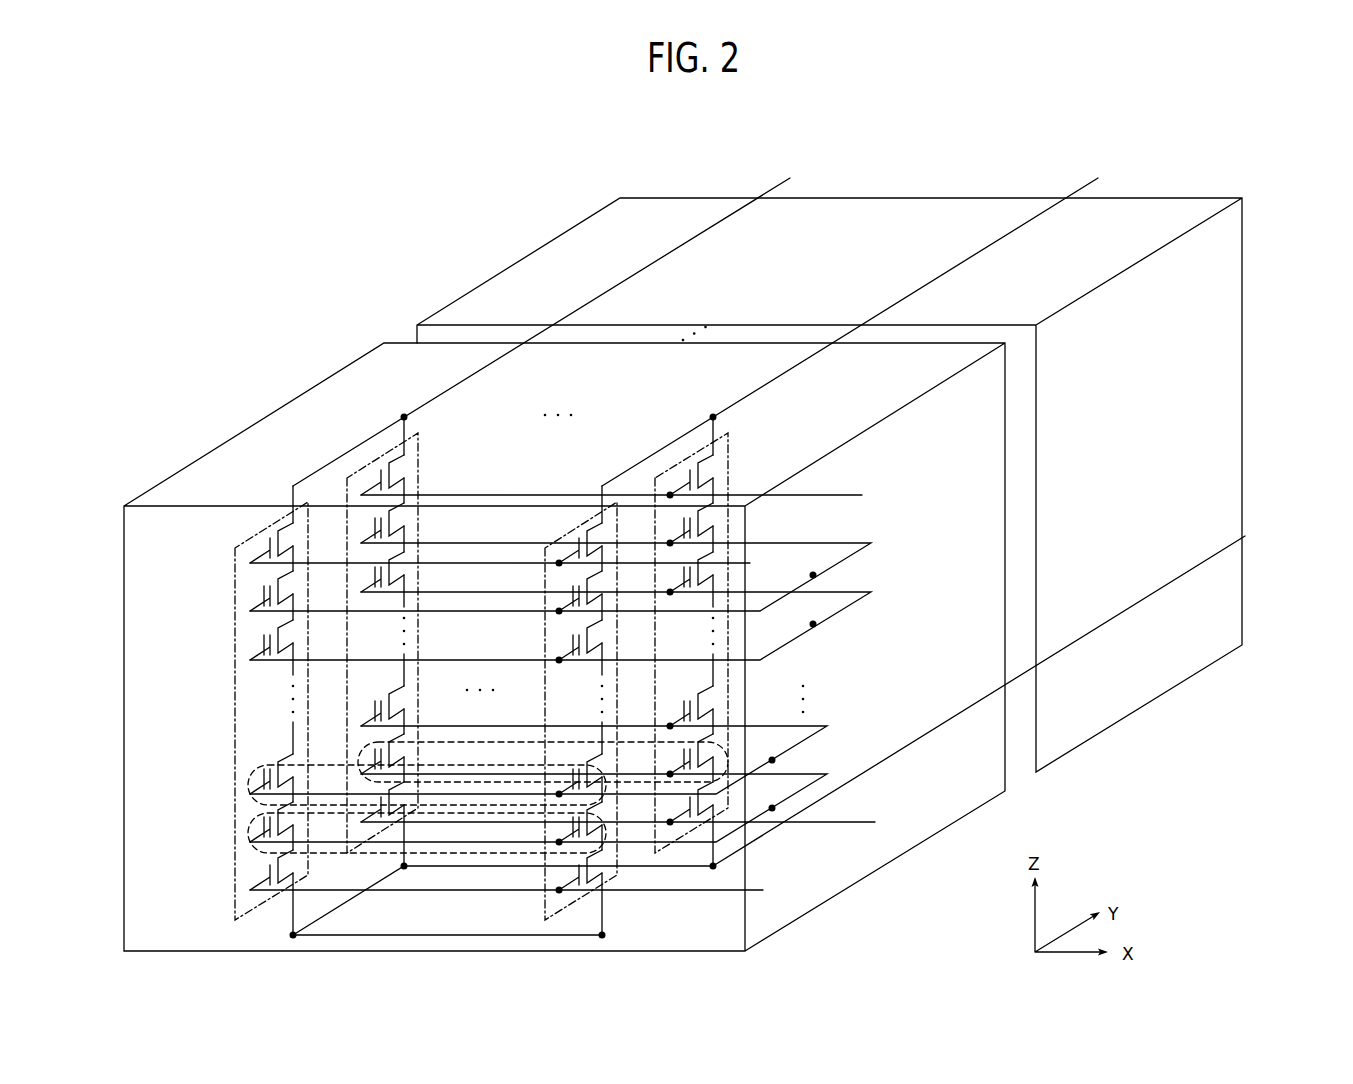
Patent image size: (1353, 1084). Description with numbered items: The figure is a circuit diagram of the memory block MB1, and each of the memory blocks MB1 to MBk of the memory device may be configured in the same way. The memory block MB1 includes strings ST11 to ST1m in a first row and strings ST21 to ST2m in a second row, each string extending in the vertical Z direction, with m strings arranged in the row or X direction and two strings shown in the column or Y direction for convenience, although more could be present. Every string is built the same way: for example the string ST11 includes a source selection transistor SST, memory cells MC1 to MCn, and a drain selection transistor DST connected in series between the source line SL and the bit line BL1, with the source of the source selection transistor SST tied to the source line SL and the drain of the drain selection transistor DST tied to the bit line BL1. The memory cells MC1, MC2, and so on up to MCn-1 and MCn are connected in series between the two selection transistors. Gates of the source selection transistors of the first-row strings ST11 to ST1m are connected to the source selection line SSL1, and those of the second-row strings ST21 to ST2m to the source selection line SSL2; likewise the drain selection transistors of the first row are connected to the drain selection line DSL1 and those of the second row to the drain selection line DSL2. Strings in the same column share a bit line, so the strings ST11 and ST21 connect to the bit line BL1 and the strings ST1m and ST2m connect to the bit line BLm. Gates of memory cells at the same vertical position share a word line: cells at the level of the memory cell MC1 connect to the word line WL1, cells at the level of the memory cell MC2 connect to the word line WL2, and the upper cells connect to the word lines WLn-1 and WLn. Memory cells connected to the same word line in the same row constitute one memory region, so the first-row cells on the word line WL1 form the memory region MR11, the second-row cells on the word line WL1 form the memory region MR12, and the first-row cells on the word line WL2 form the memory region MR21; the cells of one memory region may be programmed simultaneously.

The memory block MBk is at (519, 249).
The memory block MB1 is at (264, 415).
The bit line BL1 is at (555, 319).
The bit line BLm is at (865, 319).
The source line SL is at (1245, 536).
The string ST11 is at (273, 525).
The string ST1m is at (582, 523).
The string ST21 is at (385, 455).
The string ST2m is at (693, 457).
The drain selection transistor DST is at (248, 549).
The memory cell MCn is at (248, 595).
The memory cell MCn-1 is at (248, 643).
The memory cell MC2 is at (248, 767).
The memory cell MC1 is at (248, 825).
The source selection transistor SST is at (248, 874).
The memory region MR12 is at (357, 760).
The memory region MR21 is at (247, 790).
The memory region MR11 is at (247, 843).
The drain selection line DSL1 is at (526, 564).
The drain selection line DSL2 is at (636, 497).
The word line WLn is at (813, 575).
The word line WLn-1 is at (813, 624).
The word line WL2 is at (772, 760).
The word line WL1 is at (772, 808).
The source selection line SSL1 is at (531, 892).
The source selection line SSL2 is at (641, 822).